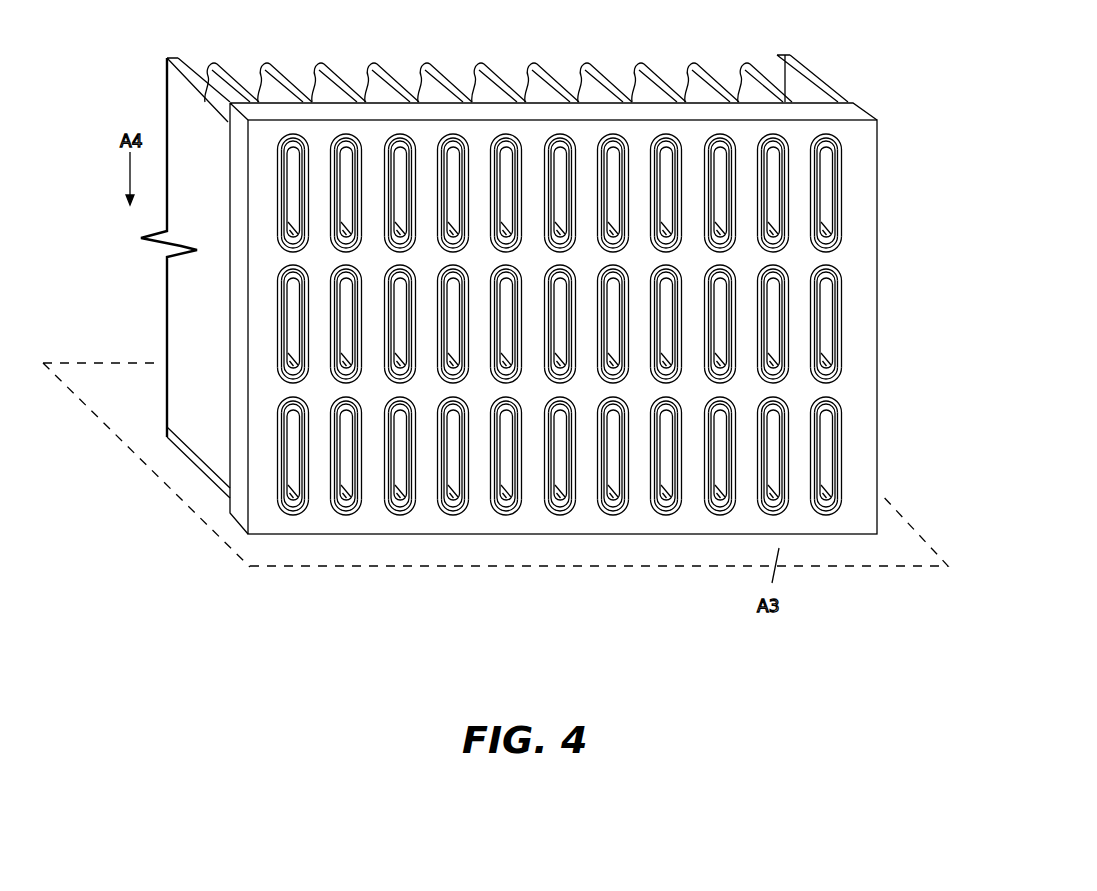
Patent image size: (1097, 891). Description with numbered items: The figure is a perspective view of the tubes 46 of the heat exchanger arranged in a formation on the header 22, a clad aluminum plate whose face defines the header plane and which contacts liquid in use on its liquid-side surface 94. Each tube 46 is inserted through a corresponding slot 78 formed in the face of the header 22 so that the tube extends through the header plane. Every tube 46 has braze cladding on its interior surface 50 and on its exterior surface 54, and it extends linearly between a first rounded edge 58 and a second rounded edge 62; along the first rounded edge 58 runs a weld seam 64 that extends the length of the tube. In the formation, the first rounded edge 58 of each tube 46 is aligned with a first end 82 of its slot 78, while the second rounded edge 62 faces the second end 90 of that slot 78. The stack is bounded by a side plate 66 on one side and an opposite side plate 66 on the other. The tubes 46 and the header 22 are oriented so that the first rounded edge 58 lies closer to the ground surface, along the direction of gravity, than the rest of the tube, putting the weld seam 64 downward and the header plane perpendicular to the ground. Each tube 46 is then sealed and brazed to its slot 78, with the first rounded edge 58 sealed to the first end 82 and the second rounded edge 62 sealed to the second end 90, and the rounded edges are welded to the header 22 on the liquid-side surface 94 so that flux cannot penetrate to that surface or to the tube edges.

The header 22 is at (580, 318).
The tube 46 is at (285, 145).
The interior surface 50 is at (556, 178).
The exterior surface 54 is at (552, 178).
The first rounded edge 58 is at (292, 247).
The second rounded edge 62 is at (300, 137).
The weld seam 64 is at (295, 240).
The side plate 66 is at (815, 82).
The slot 78 is at (366, 150).
The first end 82 is at (292, 253).
The second end 90 is at (293, 143).
The liquid-side surface 94 is at (805, 255).